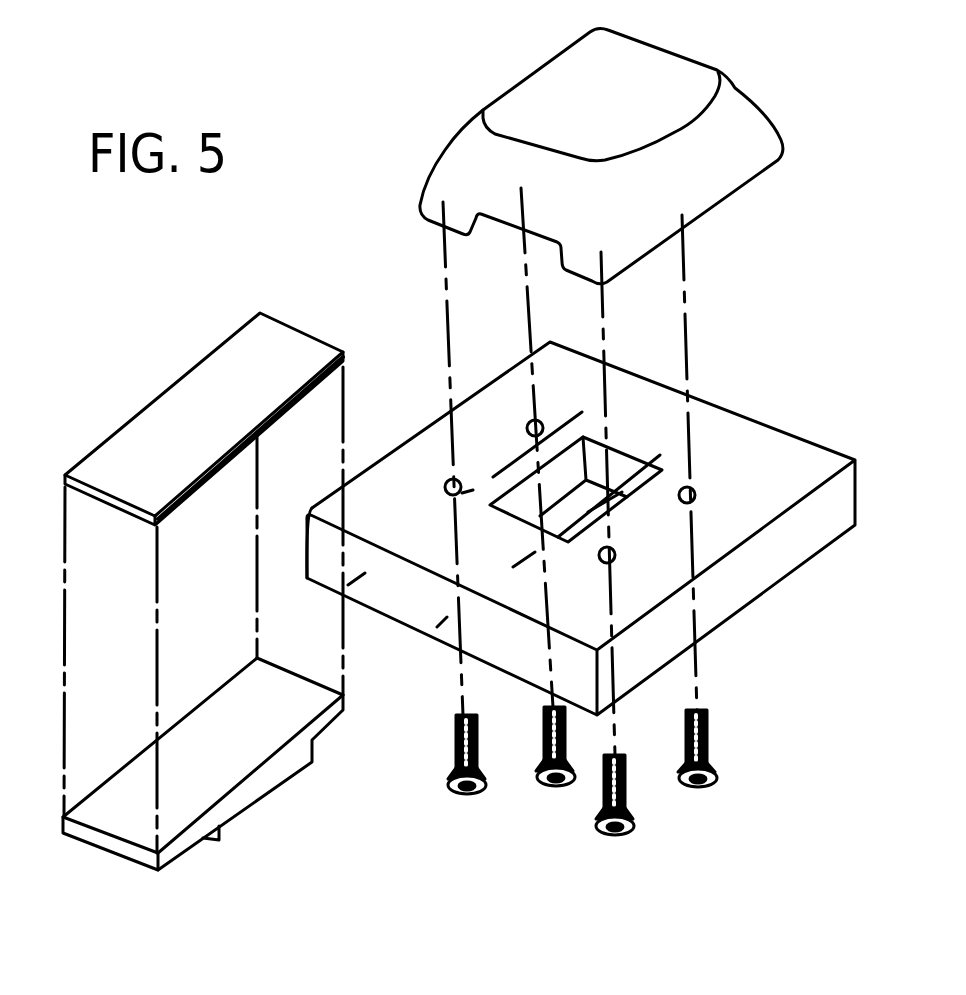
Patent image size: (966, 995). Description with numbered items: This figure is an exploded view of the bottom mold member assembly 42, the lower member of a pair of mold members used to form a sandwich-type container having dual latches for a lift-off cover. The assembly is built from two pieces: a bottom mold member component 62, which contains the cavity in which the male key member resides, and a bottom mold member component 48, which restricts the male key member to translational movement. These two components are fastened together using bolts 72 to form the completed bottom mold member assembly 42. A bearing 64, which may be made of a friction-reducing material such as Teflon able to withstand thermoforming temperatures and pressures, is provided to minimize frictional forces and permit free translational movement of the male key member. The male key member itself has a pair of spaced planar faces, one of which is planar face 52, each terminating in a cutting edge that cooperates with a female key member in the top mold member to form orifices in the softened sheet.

The bottom mold member assembly 42 is at (862, 327).
The bottom mold member component 48 is at (688, 55).
The planar face 52 is at (238, 824).
The bottom mold member component 62 is at (812, 443).
The bearing 64 is at (288, 327).
The bolts 72 is at (541, 773).